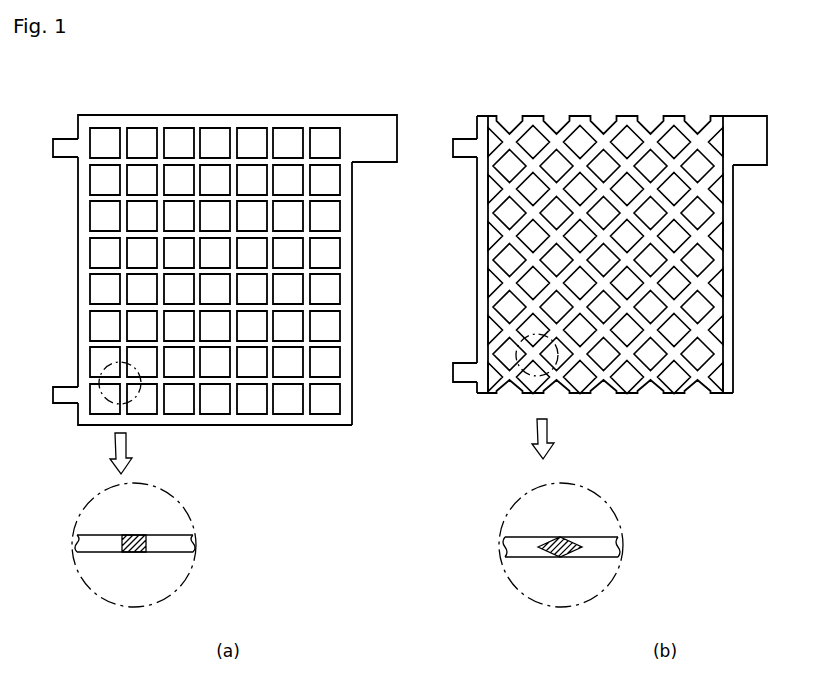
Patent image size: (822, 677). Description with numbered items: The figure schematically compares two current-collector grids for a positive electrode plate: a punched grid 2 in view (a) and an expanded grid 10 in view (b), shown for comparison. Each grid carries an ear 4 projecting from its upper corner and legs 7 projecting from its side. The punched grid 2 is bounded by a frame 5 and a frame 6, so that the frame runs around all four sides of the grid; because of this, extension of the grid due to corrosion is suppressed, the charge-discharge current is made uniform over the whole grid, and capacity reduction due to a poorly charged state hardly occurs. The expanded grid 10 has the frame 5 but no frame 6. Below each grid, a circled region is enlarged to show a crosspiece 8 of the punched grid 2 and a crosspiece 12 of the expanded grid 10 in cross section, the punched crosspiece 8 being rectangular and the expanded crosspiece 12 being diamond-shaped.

The punched grid 2 is at (259, 488).
The ear part 4 is at (372, 150).
The frame 5 is at (85, 295).
The frame 6 is at (207, 122).
The leg 7 is at (65, 147).
The crosspiece 8 is at (122, 378).
The expanded grid 10 is at (645, 470).
The crosspiece 12 is at (537, 357).